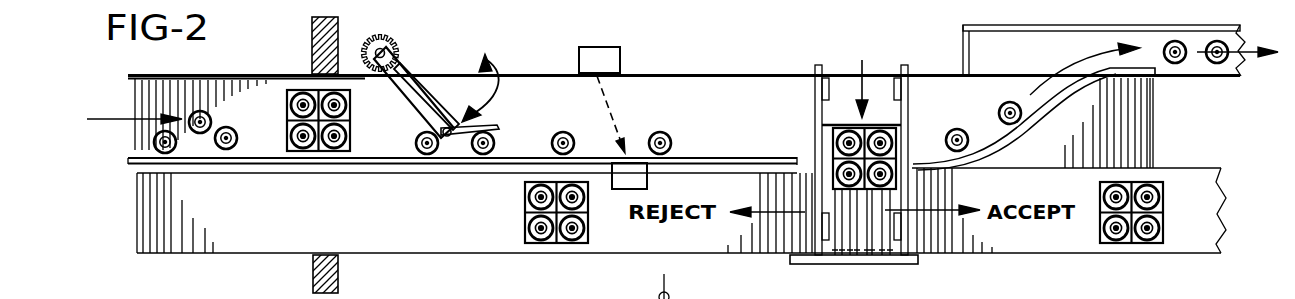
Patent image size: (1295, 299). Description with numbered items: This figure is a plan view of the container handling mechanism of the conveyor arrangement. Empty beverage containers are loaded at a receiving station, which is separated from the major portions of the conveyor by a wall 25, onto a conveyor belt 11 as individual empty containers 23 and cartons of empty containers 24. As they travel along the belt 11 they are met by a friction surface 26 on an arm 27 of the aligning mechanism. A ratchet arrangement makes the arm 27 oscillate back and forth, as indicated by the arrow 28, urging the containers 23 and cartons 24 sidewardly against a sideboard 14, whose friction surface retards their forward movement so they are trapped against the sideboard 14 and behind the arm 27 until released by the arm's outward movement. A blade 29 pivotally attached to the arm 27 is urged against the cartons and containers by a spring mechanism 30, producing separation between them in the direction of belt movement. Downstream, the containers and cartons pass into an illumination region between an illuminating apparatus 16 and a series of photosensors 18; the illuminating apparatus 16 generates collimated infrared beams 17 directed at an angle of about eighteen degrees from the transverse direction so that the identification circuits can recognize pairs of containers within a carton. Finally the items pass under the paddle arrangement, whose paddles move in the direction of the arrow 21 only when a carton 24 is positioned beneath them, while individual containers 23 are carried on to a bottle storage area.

The conveyor belt 11 is at (771, 90).
The sideboard 14 is at (278, 161).
The illuminating apparatus 16 is at (593, 50).
The illuminating beam 17 is at (612, 105).
The photosensors 18 is at (627, 183).
The arrow indicating paddle movement 21 is at (860, 90).
The individual empty containers 23 is at (198, 134).
The cartons of empty containers 24 is at (350, 140).
The wall 25 is at (310, 46).
The friction surface 26 is at (412, 103).
The arm 27 is at (402, 55).
The arrow indicating arm oscillation 28 is at (494, 92).
The blade 29 is at (497, 124).
The spring mechanism 30 is at (427, 90).